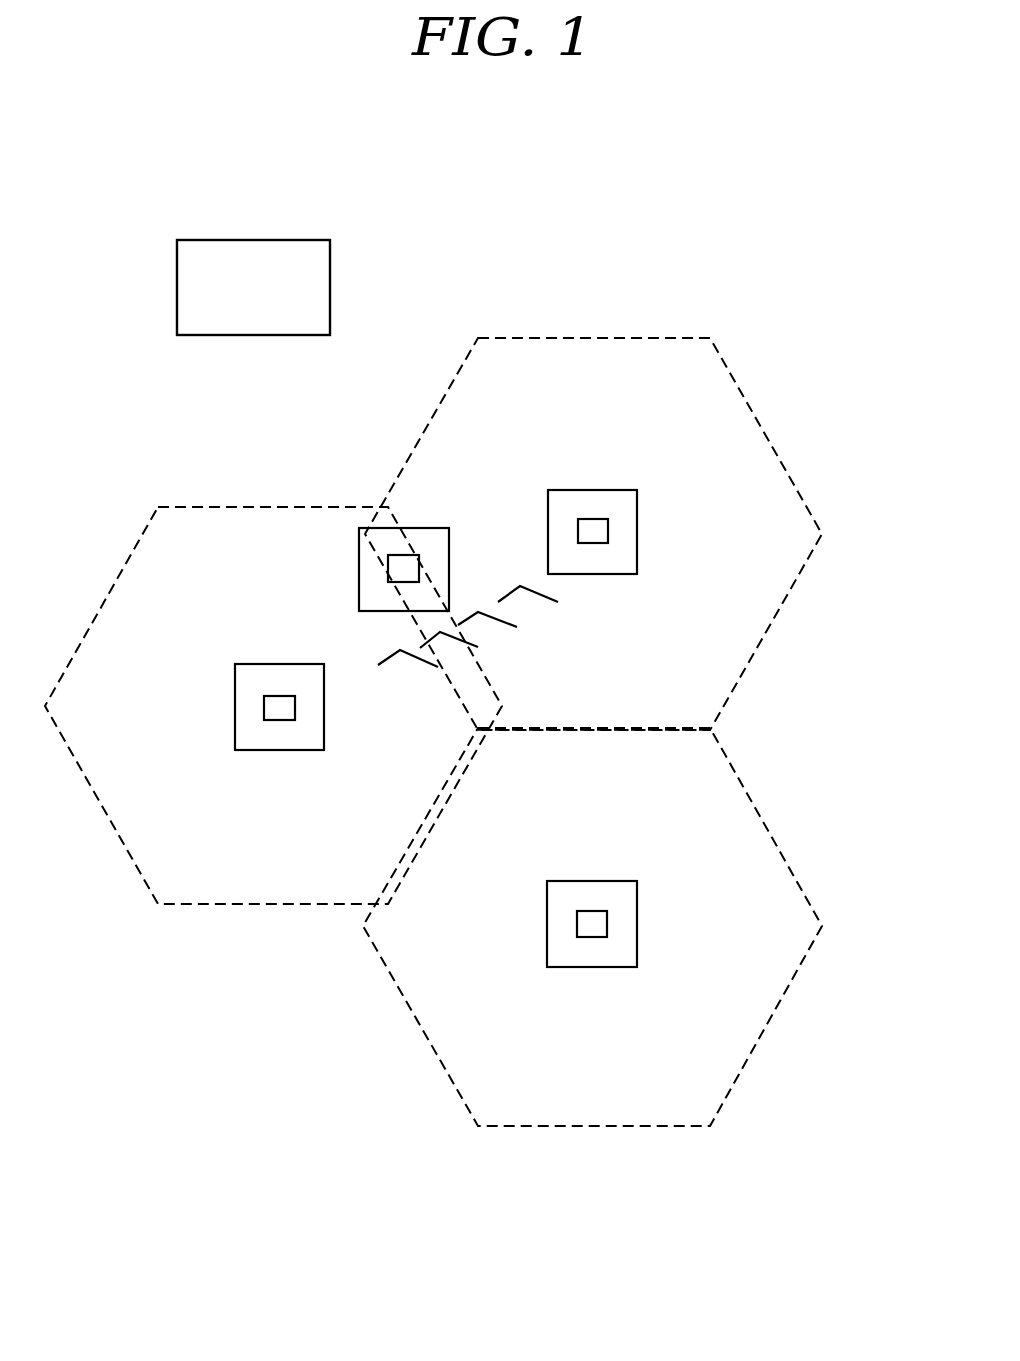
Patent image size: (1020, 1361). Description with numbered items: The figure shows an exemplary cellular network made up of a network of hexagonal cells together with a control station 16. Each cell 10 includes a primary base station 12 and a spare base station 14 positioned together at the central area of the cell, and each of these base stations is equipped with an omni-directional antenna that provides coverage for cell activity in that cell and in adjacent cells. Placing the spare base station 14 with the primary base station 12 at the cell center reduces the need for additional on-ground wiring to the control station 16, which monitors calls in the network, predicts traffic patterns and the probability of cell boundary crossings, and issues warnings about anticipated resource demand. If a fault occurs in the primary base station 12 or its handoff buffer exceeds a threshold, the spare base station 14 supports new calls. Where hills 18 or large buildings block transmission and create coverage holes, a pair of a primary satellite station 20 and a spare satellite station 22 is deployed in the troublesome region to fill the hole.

The cell 10 is at (590, 1128).
The primary base station 12 is at (596, 881).
The spare base station 14 is at (577, 922).
The control station 16 is at (258, 239).
The hills 18 is at (507, 642).
The primary satellite station 20 is at (404, 527).
The spare satellite station 22 is at (388, 567).